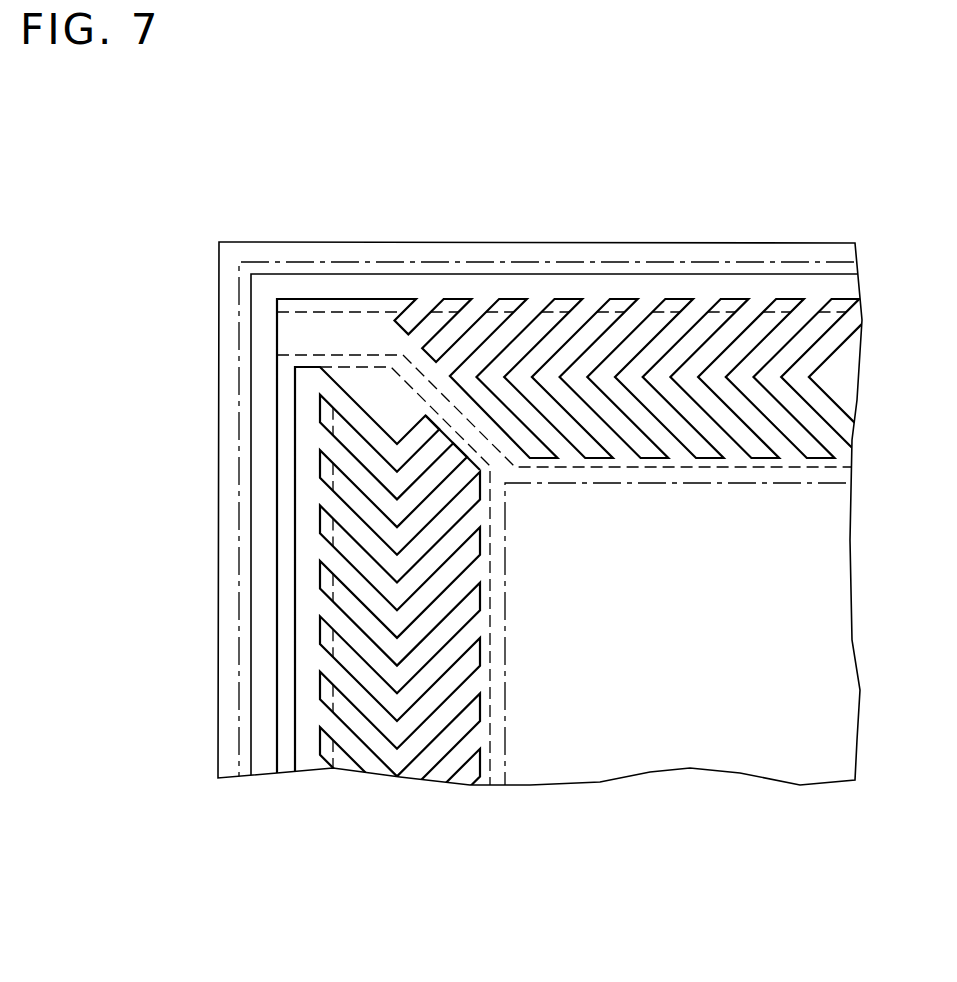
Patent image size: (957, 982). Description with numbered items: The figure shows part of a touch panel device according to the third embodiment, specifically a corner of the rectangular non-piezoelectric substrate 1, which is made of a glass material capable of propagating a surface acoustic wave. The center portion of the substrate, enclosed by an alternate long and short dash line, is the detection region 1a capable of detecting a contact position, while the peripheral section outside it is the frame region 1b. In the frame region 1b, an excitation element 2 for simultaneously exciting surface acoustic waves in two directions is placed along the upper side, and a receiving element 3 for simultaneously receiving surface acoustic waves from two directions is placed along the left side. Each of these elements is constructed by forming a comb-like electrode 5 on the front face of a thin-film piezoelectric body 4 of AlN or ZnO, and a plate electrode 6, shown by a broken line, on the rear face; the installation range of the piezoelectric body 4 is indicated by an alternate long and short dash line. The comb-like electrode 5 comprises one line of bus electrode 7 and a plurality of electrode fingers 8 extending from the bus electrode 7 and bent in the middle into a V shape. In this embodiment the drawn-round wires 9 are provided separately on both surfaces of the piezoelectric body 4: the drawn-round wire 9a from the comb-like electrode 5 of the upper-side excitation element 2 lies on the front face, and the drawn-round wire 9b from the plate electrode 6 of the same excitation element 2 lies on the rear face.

The non-piezoelectric substrate 1 is at (802, 237).
The detection region 1a is at (737, 487).
The frame region 1b is at (665, 255).
The excitation element 2 is at (708, 276).
The receiving element 3 is at (300, 655).
The piezoelectric body 4 is at (337, 262).
The comb-like electrode 5 is at (542, 285).
The plate electrode 6 is at (333, 743).
The bus electrode 7 is at (603, 282).
The electrode fingers 8 is at (488, 342).
The drawn-round wires 9 is at (165, 450).
The drawn-round wire from the comb-like electrode 9a is at (260, 435).
The drawn-round wire from the plate electrode 9b is at (260, 471).